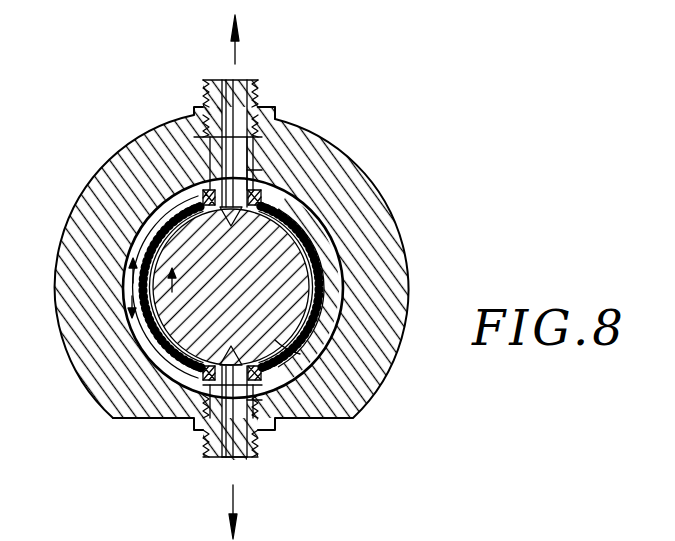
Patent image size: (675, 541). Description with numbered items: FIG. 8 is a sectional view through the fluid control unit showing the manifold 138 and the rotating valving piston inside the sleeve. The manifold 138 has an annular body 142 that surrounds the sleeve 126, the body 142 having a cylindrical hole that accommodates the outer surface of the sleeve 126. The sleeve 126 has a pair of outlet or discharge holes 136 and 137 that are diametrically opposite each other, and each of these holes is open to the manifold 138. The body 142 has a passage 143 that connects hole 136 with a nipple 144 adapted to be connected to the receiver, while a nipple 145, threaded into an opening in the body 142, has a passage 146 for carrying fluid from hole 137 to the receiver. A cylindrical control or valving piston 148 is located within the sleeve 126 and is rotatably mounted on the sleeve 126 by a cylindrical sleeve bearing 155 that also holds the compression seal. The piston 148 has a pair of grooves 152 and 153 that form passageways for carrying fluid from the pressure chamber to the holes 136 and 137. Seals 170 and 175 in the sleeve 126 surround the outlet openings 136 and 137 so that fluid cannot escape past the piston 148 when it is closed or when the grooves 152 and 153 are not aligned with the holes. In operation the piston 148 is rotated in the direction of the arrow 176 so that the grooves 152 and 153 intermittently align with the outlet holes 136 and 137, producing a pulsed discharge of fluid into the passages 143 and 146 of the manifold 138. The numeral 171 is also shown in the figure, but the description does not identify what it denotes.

The manifold 138 is at (104, 156).
The annular body 142 is at (362, 205).
The nipple 144 is at (258, 82).
The passage 143 is at (262, 143).
The outlet hole 136 is at (250, 180).
The seal 170 is at (203, 190).
The groove 152 is at (229, 224).
The arrow 176 is at (174, 300).
The groove 153 is at (222, 352).
The sleeve 126 is at (150, 343).
The sleeve bearing 155 is at (326, 248).
The flow gap 171 is at (126, 287).
The valving piston 148 is at (300, 354).
The seal 175 is at (178, 387).
The outlet hole 137 is at (243, 387).
The nipple 145 is at (206, 450).
The passage 146 is at (237, 458).